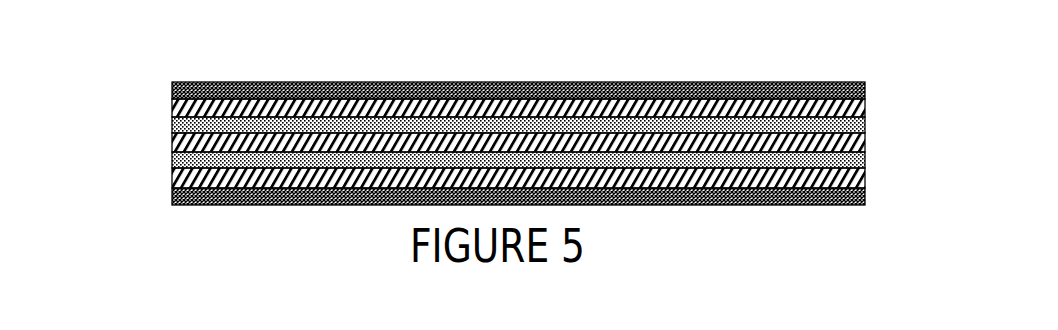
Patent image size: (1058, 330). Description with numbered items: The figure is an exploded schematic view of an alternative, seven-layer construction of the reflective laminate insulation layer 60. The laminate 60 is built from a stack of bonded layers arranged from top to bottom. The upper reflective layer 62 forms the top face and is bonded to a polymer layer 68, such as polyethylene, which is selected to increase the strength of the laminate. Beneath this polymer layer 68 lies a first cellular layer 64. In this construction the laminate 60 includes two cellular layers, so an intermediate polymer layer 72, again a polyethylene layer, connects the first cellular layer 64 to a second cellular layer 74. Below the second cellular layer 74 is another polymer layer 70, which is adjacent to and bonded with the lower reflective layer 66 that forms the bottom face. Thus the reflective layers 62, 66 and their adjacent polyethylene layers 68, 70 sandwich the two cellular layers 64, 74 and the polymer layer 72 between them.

The reflective laminate layer 60 is at (110, 84).
The upper reflective layer 62 is at (865, 89).
The polymer layer 68 is at (865, 108).
The cellular layer 64 is at (865, 124).
The polymer layer 72 is at (865, 141).
The cellular layer 74 is at (865, 162).
The polymer layer 70 is at (865, 177).
The lower reflective layer 66 is at (865, 191).